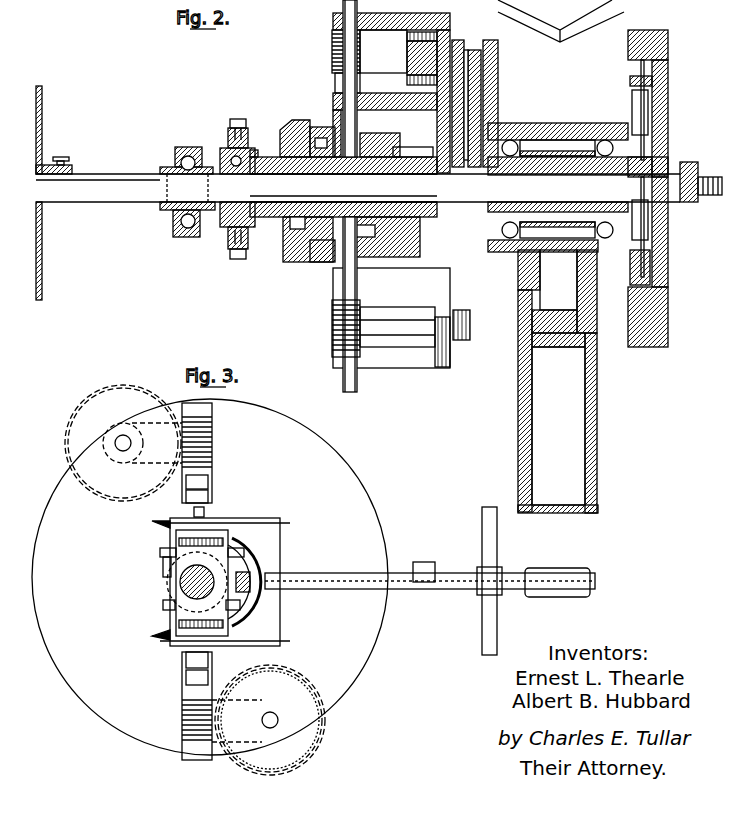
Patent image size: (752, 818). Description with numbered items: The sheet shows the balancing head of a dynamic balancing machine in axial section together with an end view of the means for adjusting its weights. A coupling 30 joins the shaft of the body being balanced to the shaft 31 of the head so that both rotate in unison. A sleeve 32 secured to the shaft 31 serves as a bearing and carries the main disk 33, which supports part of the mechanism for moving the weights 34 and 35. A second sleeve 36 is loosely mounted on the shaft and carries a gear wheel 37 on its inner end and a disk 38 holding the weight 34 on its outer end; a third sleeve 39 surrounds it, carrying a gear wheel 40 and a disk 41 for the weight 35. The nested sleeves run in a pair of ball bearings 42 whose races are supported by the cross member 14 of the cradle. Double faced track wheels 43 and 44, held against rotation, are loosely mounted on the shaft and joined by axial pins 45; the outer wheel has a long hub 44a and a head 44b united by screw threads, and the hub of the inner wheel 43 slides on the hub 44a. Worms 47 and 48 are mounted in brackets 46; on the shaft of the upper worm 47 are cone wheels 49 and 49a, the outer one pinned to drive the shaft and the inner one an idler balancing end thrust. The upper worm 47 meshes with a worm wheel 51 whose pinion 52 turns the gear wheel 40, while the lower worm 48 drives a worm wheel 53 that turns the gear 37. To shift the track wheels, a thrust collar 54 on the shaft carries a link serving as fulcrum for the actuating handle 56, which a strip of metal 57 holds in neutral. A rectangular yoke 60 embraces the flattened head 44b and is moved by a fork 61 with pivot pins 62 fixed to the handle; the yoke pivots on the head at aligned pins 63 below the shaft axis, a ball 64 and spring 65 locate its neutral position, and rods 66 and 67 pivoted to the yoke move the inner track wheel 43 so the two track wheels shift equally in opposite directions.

In FIG. 2, the cross member 14 is at (598, 390).
In FIG. 2, the coupling 30 is at (42, 88).
In FIG. 2, the shaft 31 is at (106, 174).
In FIG. 3, the shaft 31 is at (198, 590).
In FIG. 2, the sleeve 32 is at (536, 130).
In FIG. 2, the main disk 33 is at (442, 367).
In FIG. 2, the weight 34 is at (645, 347).
In FIG. 2, the weight 35 is at (646, 36).
In FIG. 2, the second sleeve 36 is at (573, 165).
In FIG. 2, the gear wheel 37 is at (462, 42).
In FIG. 2, the disk 38 is at (668, 118).
In FIG. 2, the third sleeve 39 is at (560, 250).
In FIG. 2, the gear wheel 40 is at (518, 266).
In FIG. 2, the disk 41 is at (630, 82).
In FIG. 2, the ball bearings 42 is at (508, 140).
In FIG. 2, the inner track wheel 43 is at (300, 233).
In FIG. 2, the outer track wheel 44 is at (296, 258).
In FIG. 2, the sleeve or hub 44a is at (396, 202).
In FIG. 2, the head 44b is at (222, 236).
In FIG. 3, the head 44b is at (168, 626).
In FIG. 2, the axial pins 45 is at (425, 147).
In FIG. 2, the brackets 46 is at (392, 16).
In FIG. 2, the upper worm 47 is at (333, 50).
In FIG. 3, the upper worm 47 is at (214, 441).
In FIG. 2, the lower worm 48 is at (332, 327).
In FIG. 3, the lower worm 48 is at (182, 718).
In FIG. 2, the cone wheel 49 is at (330, 135).
In FIG. 2, the cone wheel 49a is at (305, 125).
In FIG. 3, the worm wheel 51 is at (84, 398).
In FIG. 3, the pinion 52 is at (127, 424).
In FIG. 2, the worm wheel 53 is at (357, 384).
In FIG. 3, the worm wheel 53 is at (326, 712).
In FIG. 2, the ball bearing thrust collar 54 is at (176, 163).
In FIG. 3, the actuating handle 56 is at (556, 568).
In FIG. 3, the strip of metal 57 is at (424, 562).
In FIG. 2, the rectangular yoke 60 is at (230, 142).
In FIG. 3, the rectangular yoke 60 is at (174, 540).
In FIG. 3, the fork 61 is at (263, 520).
In FIG. 3, the pivot pins 62 is at (193, 513).
In FIG. 3, the pivot pins 63 is at (238, 652).
In FIG. 3, the ball 64 is at (165, 588).
In FIG. 3, the spring 65 is at (215, 548).
In FIG. 3, the rod 66 is at (160, 556).
In FIG. 3, the rod 67 is at (240, 556).